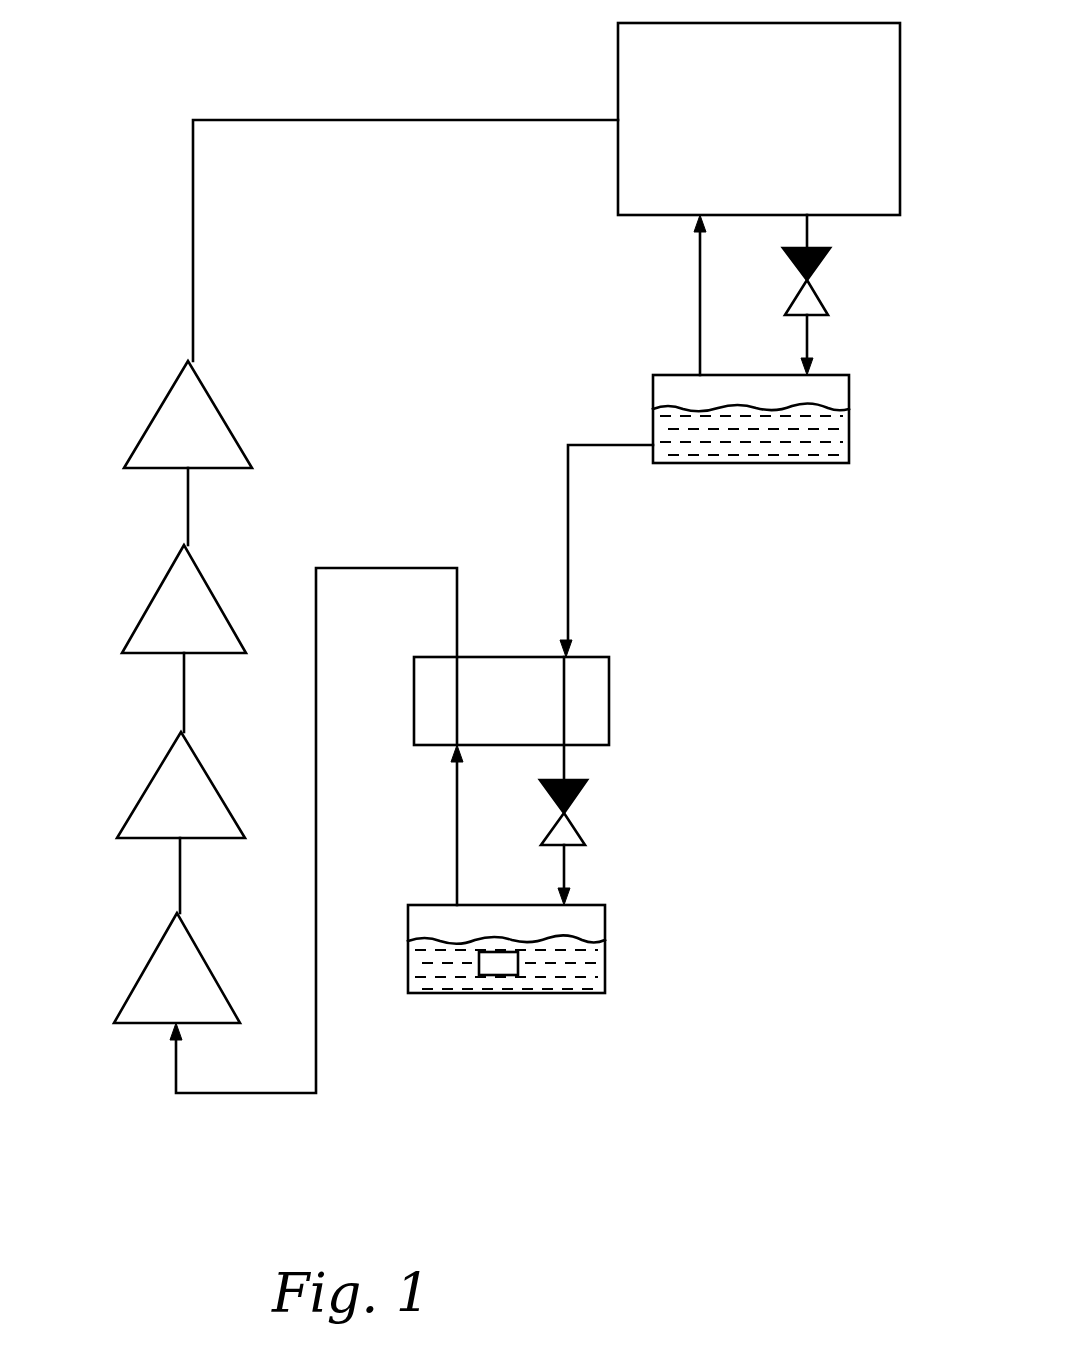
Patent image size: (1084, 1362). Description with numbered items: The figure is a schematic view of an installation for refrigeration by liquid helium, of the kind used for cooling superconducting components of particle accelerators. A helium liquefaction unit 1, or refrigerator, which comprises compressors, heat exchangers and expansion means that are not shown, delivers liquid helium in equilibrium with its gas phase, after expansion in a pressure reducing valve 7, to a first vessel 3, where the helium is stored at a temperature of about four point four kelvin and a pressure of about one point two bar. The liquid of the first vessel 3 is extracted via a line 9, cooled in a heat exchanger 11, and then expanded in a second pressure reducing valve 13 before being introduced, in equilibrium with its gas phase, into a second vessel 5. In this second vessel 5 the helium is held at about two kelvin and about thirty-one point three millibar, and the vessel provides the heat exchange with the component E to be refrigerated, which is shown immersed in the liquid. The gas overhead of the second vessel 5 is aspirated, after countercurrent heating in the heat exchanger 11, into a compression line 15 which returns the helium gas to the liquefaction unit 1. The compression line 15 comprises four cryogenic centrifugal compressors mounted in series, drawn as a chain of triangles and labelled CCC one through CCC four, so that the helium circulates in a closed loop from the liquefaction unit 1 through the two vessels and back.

The helium liquefaction unit 1 is at (888, 112).
The first vessel 3 is at (849, 425).
The second vessel 5 is at (605, 920).
The pressure reducing valve 7 is at (810, 282).
The line 9 is at (568, 563).
The heat exchanger 11 is at (609, 693).
The pressure reducing valve 13 is at (566, 815).
The compression line 15 is at (136, 882).
The component to be refrigerated E is at (501, 964).